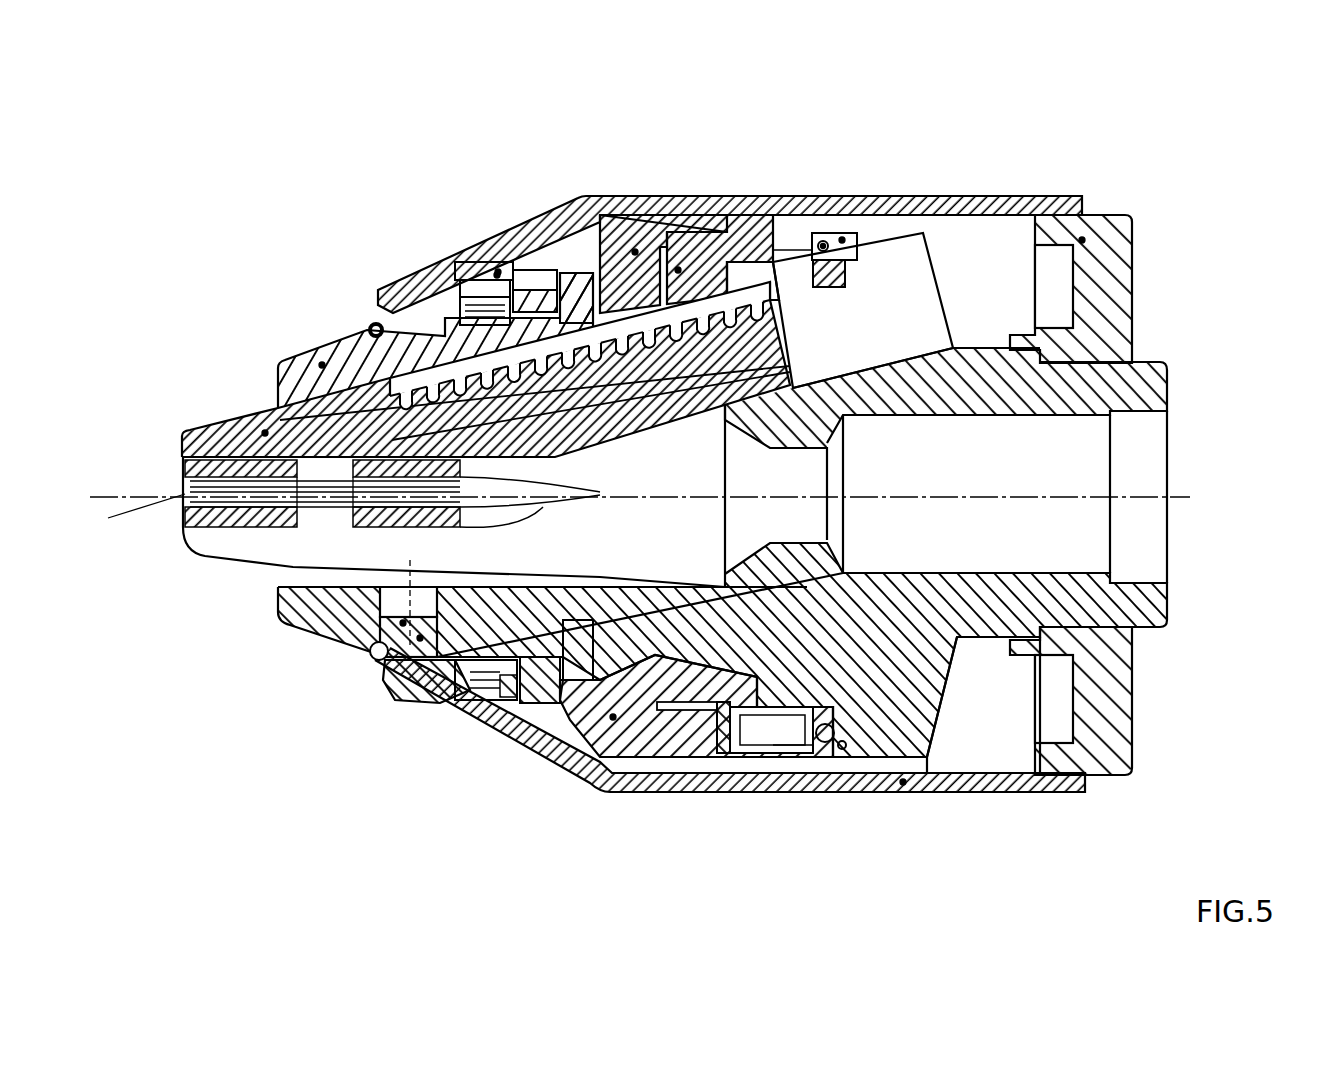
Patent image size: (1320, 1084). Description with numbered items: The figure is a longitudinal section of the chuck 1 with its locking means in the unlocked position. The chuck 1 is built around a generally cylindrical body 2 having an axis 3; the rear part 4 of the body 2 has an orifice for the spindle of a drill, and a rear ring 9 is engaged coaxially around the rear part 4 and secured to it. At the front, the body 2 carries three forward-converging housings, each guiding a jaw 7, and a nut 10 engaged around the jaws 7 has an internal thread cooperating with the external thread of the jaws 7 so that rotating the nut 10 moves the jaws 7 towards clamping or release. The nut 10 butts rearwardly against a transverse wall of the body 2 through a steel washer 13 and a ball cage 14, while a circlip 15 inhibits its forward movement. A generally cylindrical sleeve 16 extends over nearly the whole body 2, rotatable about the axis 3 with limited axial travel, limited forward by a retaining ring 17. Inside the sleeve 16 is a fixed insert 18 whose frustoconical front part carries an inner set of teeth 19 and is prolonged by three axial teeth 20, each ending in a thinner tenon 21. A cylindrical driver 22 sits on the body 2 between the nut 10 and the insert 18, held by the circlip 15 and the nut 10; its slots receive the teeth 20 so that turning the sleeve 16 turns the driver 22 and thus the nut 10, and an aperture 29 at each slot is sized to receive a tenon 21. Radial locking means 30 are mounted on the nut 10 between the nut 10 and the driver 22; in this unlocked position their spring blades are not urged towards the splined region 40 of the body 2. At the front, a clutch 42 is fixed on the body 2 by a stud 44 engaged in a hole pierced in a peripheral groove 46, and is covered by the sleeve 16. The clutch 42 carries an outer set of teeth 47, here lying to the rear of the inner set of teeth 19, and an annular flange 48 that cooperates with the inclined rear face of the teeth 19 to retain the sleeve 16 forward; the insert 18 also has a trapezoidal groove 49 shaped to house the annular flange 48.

The chuck 1 is at (1278, 153).
The body 2 is at (322, 365).
The axis 3 is at (1190, 495).
The rear part 4 is at (1160, 372).
The jaw 7 is at (265, 433).
The rear ring 9 is at (1082, 240).
The nut 10 is at (635, 252).
The steel washer 13 is at (842, 240).
The ball cage 14 is at (823, 246).
The circlip 15 is at (545, 730).
The sleeve 16 is at (903, 782).
The retaining ring 17 is at (378, 313).
The insert 18 is at (498, 272).
The inner set of teeth 19 is at (497, 275).
The tooth 20 is at (580, 245).
The tenon 21 is at (678, 270).
The driver 22 is at (585, 770).
The aperture 29 is at (702, 247).
The radial locking means 30 is at (712, 707).
The splined region 40 is at (790, 712).
The clutch 42 is at (420, 638).
The stud 44 is at (403, 623).
The peripheral groove 46 is at (372, 325).
The outer set of teeth 47 is at (520, 270).
The annular flange 48 is at (515, 700).
The groove 49 is at (480, 665).